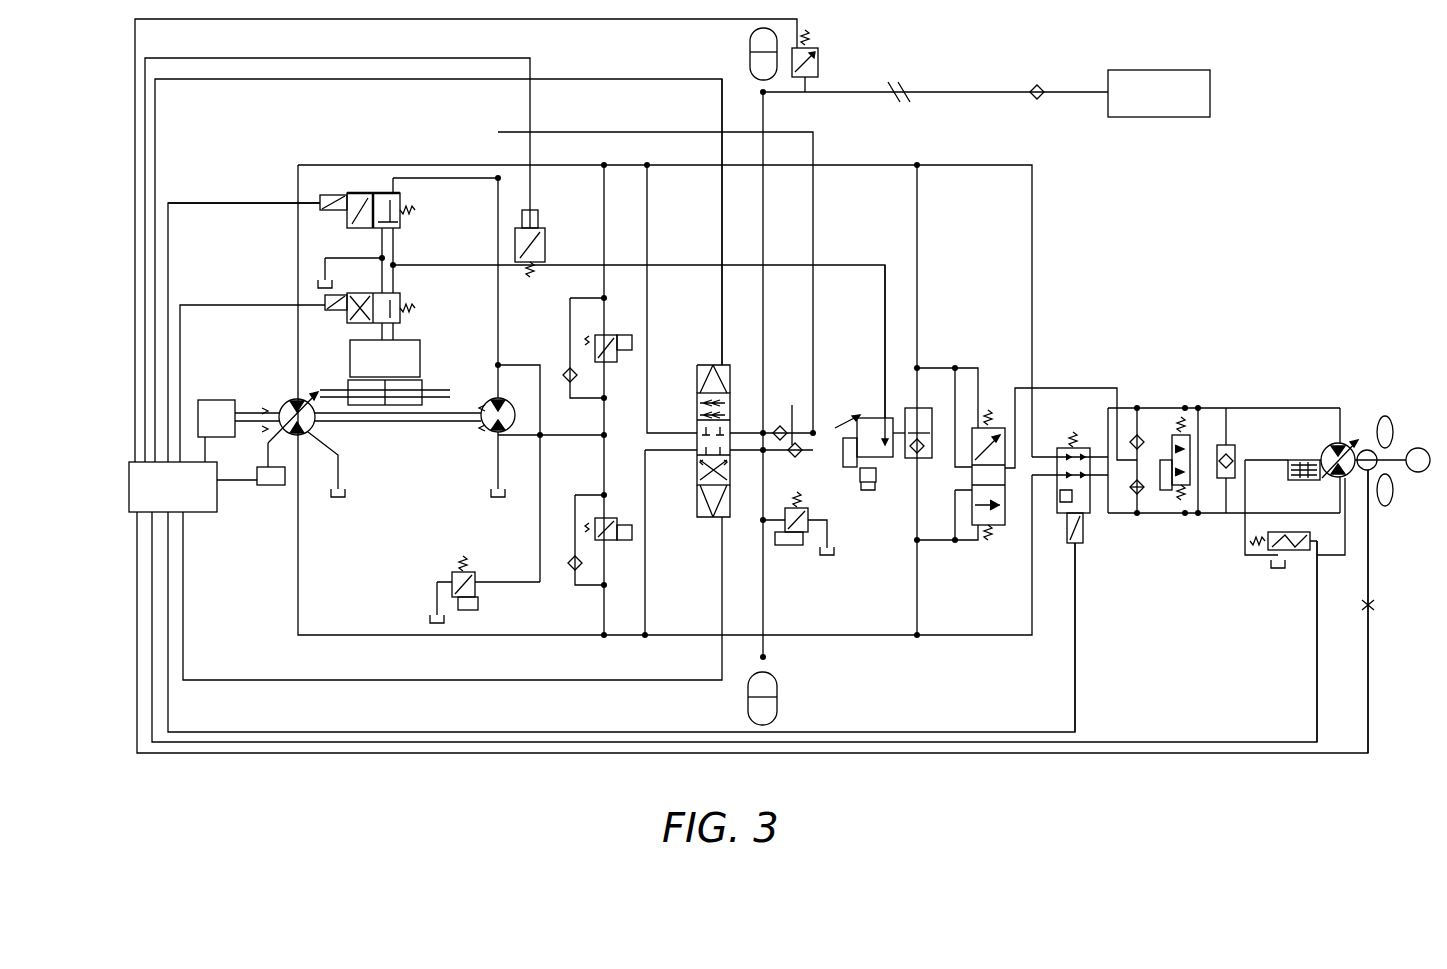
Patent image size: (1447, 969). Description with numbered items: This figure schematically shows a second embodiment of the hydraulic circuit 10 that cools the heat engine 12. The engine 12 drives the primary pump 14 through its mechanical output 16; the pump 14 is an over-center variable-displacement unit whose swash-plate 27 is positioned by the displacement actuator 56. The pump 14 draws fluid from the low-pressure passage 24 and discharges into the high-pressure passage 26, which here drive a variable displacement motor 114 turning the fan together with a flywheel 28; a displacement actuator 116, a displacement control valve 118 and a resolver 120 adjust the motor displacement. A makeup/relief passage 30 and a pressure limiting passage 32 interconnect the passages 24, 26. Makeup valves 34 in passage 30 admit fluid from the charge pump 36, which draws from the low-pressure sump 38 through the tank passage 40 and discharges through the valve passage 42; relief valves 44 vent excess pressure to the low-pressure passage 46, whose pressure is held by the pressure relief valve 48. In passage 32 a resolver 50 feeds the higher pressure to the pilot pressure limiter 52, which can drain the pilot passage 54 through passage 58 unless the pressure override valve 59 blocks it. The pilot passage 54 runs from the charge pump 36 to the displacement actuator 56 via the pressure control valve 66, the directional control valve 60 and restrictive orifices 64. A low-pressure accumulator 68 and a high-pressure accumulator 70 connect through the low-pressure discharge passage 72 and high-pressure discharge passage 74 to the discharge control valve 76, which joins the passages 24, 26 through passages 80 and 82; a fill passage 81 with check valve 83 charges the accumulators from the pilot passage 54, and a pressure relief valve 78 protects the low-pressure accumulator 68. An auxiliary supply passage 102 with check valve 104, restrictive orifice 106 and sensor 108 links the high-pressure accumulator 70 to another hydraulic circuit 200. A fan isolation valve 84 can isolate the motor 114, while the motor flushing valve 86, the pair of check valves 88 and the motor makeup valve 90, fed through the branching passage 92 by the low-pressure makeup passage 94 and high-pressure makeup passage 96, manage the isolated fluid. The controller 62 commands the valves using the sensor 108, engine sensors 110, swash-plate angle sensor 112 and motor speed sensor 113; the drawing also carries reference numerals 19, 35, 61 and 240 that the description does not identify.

The hydraulic circuit 10 is at (1162, 285).
The heat engine 12 is at (215, 400).
The primary pump 14 is at (290, 400).
The mechanical output 16 is at (258, 411).
The pressure reducing valve 19 is at (1057, 500).
The low-pressure passage 24 is at (1190, 513).
The high-pressure passage 26 is at (1002, 165).
The variable angle swash-plate 27 is at (303, 440).
The flywheel 28 is at (1418, 472).
The makeup/relief passage 30 is at (604, 205).
The pressure limiting passage 32 is at (917, 255).
The makeup valve 34 is at (565, 368).
The drain line 35 is at (1345, 558).
The charge pump 36 is at (512, 428).
The low-pressure sump 38 is at (322, 278).
The tank passage 40 is at (496, 462).
The valve passage 42 is at (540, 415).
The relief valve 44 is at (618, 355).
The low-pressure passage 46 is at (538, 575).
The pressure relief valve 48 is at (458, 570).
The resolver 50 is at (915, 460).
The pilot pressure limiter 52 is at (878, 415).
The pilot passage 54 is at (400, 245).
The displacement actuator 56 is at (425, 382).
The passage 58 is at (855, 265).
The pressure override valve 59 is at (540, 235).
The directional control valve 60 is at (348, 322).
The actuator 61 is at (385, 358).
The controller 62 is at (200, 512).
The restrictive orifice 64 is at (440, 190).
The pressure control valve 66 is at (325, 195).
The low-pressure accumulator 68 is at (778, 688).
The high-pressure accumulator 70 is at (750, 45).
The low-pressure discharge passage 72 is at (763, 580).
The high-pressure discharge passage 74 is at (763, 215).
The discharge control valve 76 is at (722, 368).
The pressure relief valve 78 is at (798, 507).
The passage 80 is at (647, 598).
The fill passage 81 is at (813, 218).
The passage 82 is at (647, 200).
The check valve 83 is at (780, 425).
The fan isolation valve 84 is at (1083, 540).
The motor flushing valve 86 is at (1178, 435).
The check valve 88 is at (1135, 408).
The motor makeup valve 90 is at (985, 418).
The branching passage 92 is at (1070, 388).
The low-pressure makeup passage 94 is at (935, 542).
The high-pressure makeup passage 96 is at (937, 368).
The auxiliary supply passage 102 is at (955, 92).
The check valve 104 is at (1040, 86).
The restrictive orifice 106 is at (897, 95).
The sensor 108 is at (818, 68).
The engine sensor 110 is at (255, 462).
The swash-plate angle sensor 112 is at (272, 487).
The motor speed sensor 113 is at (1368, 450).
The variable displacement motor 114 is at (1340, 440).
The displacement actuator 116 is at (1282, 458).
The displacement control valve 118 is at (1297, 533).
The resolver 120 is at (1232, 445).
The hydraulic circuit 200 is at (1160, 117).
The input signal 240 is at (190, 415).